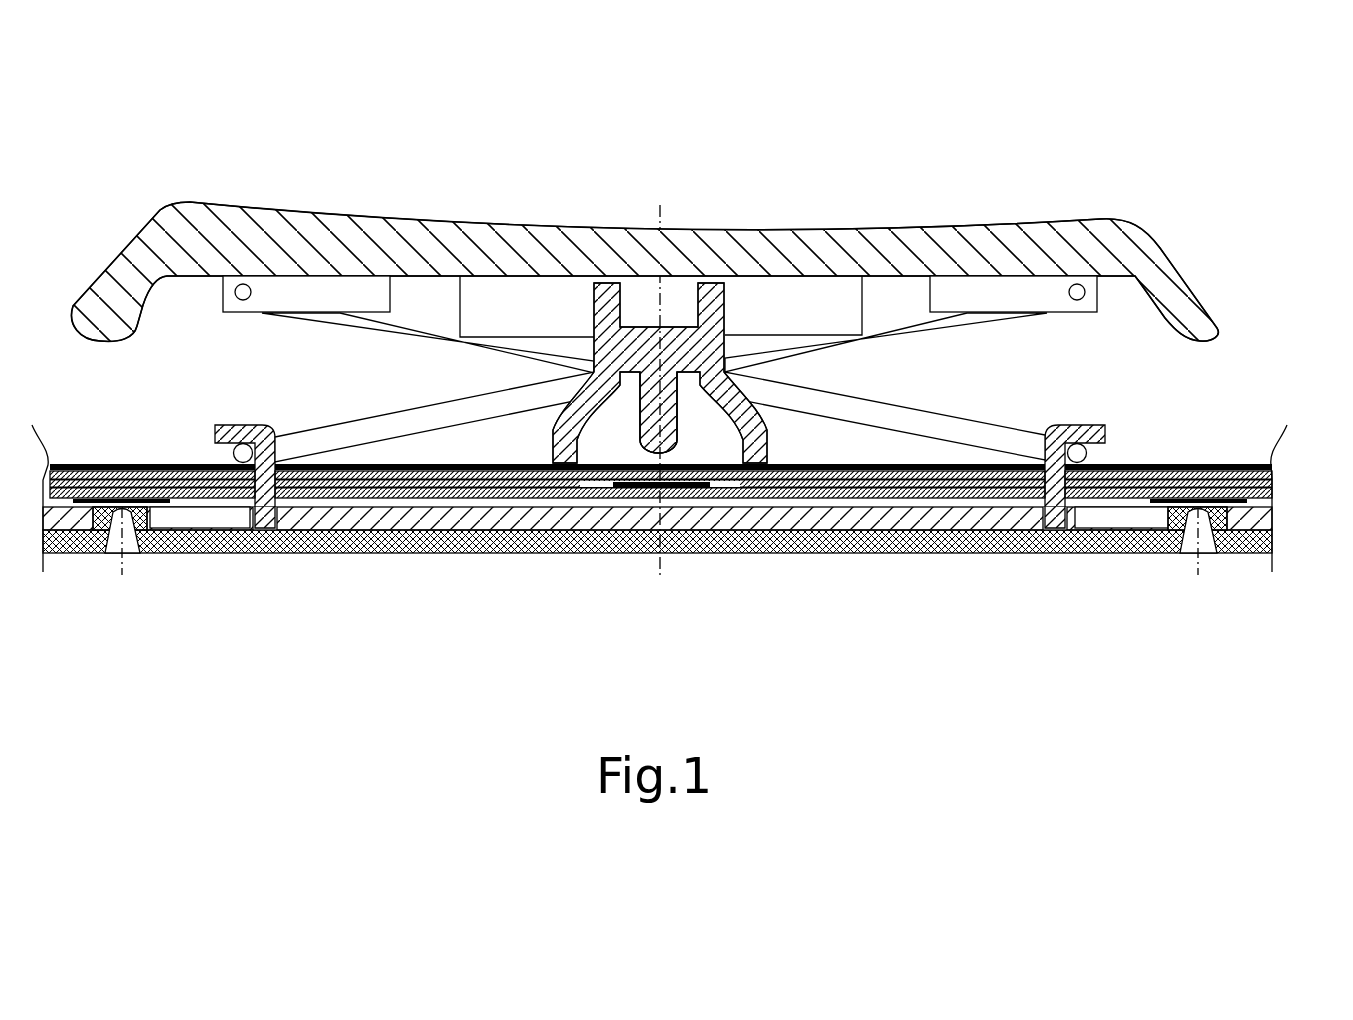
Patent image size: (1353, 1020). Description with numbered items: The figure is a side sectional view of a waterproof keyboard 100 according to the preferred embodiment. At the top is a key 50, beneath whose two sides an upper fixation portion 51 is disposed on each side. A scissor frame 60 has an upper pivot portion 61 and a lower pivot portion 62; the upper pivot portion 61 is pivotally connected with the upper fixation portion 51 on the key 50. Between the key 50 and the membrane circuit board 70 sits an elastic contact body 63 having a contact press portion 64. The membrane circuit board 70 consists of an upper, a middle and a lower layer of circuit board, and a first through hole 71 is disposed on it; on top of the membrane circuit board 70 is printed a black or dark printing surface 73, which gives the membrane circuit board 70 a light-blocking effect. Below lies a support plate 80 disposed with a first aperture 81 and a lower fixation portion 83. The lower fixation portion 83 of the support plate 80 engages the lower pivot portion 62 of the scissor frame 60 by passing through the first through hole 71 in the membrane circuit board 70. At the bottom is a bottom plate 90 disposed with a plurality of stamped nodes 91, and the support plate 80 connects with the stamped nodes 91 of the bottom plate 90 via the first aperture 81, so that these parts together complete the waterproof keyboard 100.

The waterproof keyboard 100 is at (688, 370).
The key 50 is at (838, 243).
The upper fixation portion 51 is at (308, 290).
The scissor frame 60 is at (852, 388).
The upper pivot portion 61 is at (345, 322).
The lower pivot portion 62 is at (300, 440).
The elastic contact body 63 is at (606, 298).
The contact press portion 64 is at (675, 432).
The membrane circuit board 70 is at (688, 524).
The first through hole 71 is at (247, 553).
The printing surface 73 is at (1272, 470).
The support plate 80 is at (428, 522).
The first aperture 81 is at (92, 553).
The lower fixation portion 83 is at (297, 553).
The bottom plate 90 is at (872, 560).
The stamped node 91 is at (133, 463).